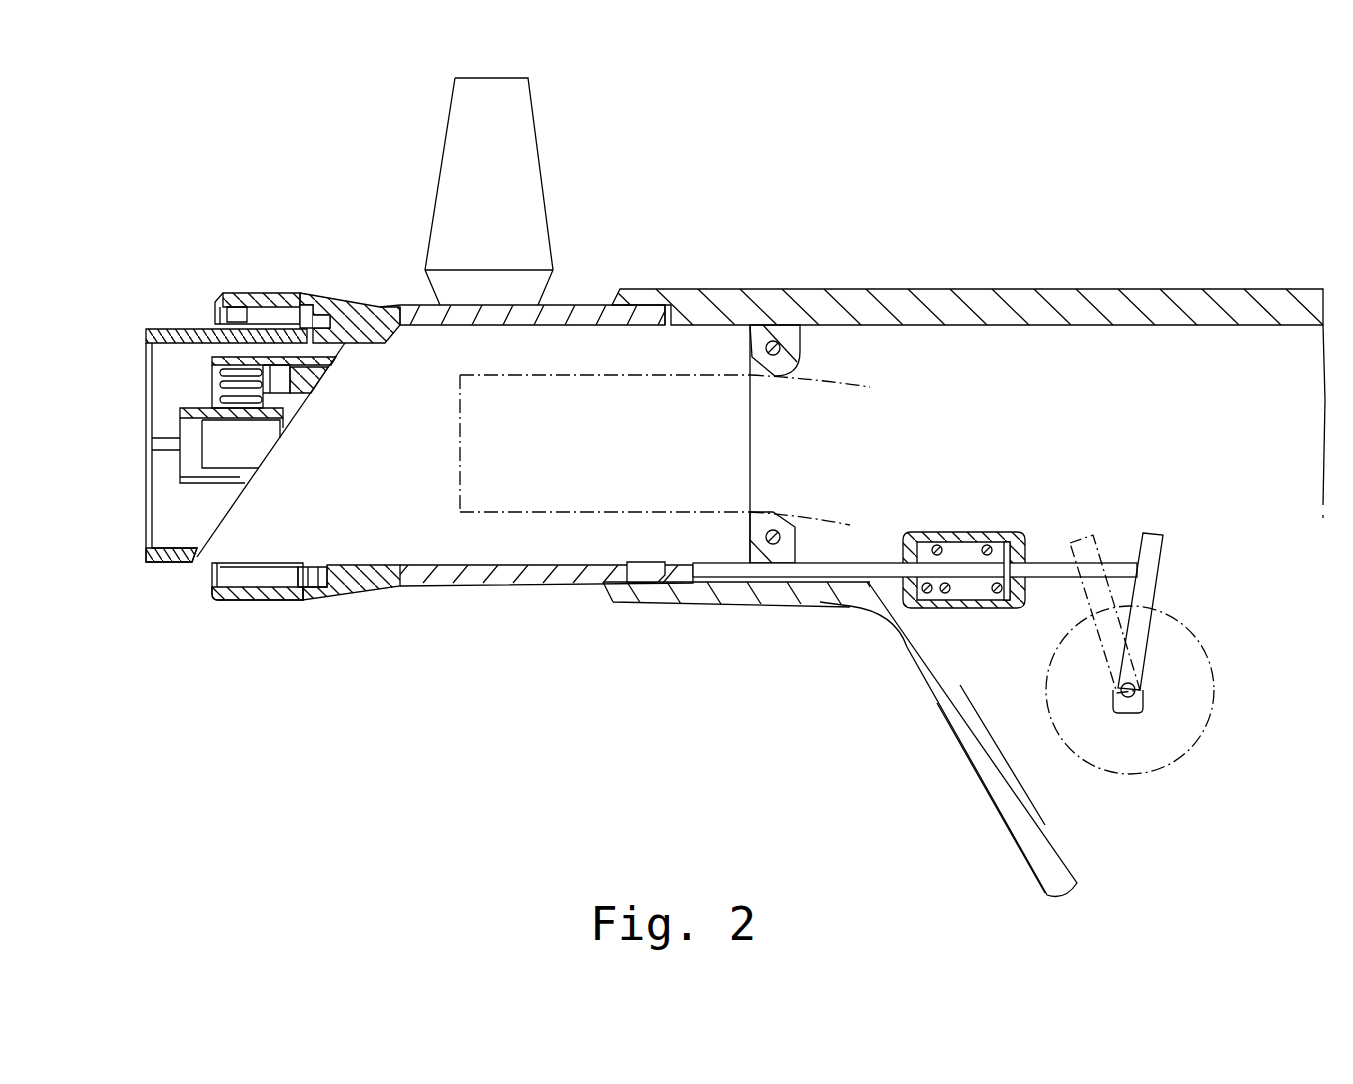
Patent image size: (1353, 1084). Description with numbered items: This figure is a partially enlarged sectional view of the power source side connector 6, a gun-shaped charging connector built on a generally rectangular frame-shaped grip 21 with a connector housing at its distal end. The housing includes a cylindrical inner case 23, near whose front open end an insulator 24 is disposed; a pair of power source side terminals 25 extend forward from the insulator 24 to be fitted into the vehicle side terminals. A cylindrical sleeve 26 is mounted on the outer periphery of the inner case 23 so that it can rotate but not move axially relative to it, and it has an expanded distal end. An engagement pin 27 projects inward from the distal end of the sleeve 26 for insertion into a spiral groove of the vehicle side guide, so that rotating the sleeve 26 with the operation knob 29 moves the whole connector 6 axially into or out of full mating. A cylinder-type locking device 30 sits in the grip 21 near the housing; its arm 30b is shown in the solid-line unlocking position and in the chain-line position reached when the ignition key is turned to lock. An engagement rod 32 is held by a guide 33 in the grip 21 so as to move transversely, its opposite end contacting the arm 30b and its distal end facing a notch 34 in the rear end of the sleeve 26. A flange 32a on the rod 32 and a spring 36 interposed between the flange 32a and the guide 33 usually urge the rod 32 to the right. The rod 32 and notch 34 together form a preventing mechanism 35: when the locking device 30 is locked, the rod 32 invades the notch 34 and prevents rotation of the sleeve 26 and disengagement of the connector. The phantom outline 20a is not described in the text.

The power source side connector 6 is at (902, 250).
The cylindrical member 20a is at (637, 372).
The grip 21 is at (1160, 289).
The inner case 23 is at (172, 328).
The insulator 24 is at (303, 357).
The power source side terminals 25 is at (216, 457).
The sleeve 26 is at (570, 303).
The engagement pin 27 is at (215, 318).
The operation knob 29 is at (515, 132).
The locking device 30 is at (1057, 753).
The arm 30b is at (1162, 552).
The engagement rod 32 is at (887, 570).
The flange 32a is at (1027, 545).
The guide 33 is at (950, 531).
The notch 34 is at (645, 576).
The preventing mechanism 35 is at (733, 588).
The spring 36 is at (962, 590).